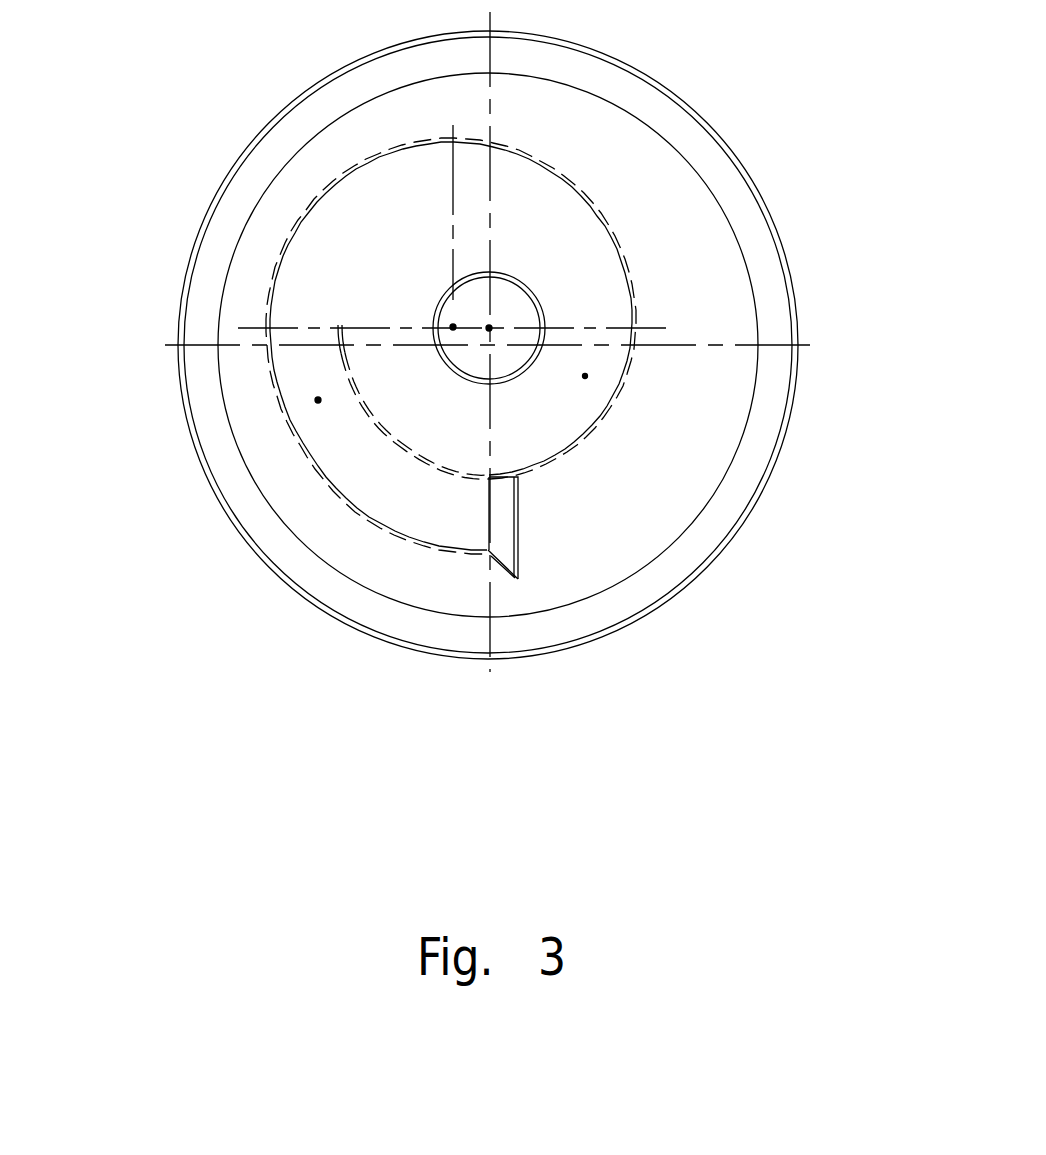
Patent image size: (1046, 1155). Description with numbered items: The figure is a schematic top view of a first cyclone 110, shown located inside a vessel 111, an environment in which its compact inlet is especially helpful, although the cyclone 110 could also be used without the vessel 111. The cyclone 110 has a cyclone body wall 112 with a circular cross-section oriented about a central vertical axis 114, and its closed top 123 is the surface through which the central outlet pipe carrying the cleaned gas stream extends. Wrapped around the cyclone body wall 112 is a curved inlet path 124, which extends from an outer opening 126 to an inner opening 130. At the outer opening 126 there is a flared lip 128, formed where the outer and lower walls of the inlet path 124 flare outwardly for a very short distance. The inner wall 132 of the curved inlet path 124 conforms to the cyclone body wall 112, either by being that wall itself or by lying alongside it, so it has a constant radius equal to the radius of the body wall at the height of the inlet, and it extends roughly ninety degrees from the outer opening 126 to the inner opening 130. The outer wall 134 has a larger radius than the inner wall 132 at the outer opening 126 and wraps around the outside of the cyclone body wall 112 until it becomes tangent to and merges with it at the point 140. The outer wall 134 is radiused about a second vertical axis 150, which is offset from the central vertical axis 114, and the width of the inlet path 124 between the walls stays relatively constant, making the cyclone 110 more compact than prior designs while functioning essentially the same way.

The first cyclone 110 is at (492, 320).
The vessel 111 is at (416, 345).
The cyclone body wall 112 is at (562, 303).
The central vertical axis 114 is at (517, 317).
The closed top 123 is at (529, 342).
The curved inlet path 124 is at (211, 452).
The outer opening 126 is at (570, 528).
The flared lip 128 is at (439, 643).
The inner opening 130 is at (245, 229).
The inner wall 132 is at (450, 416).
The outer wall 134 is at (342, 485).
The point 140 is at (570, 276).
The second vertical axis 150 is at (402, 227).